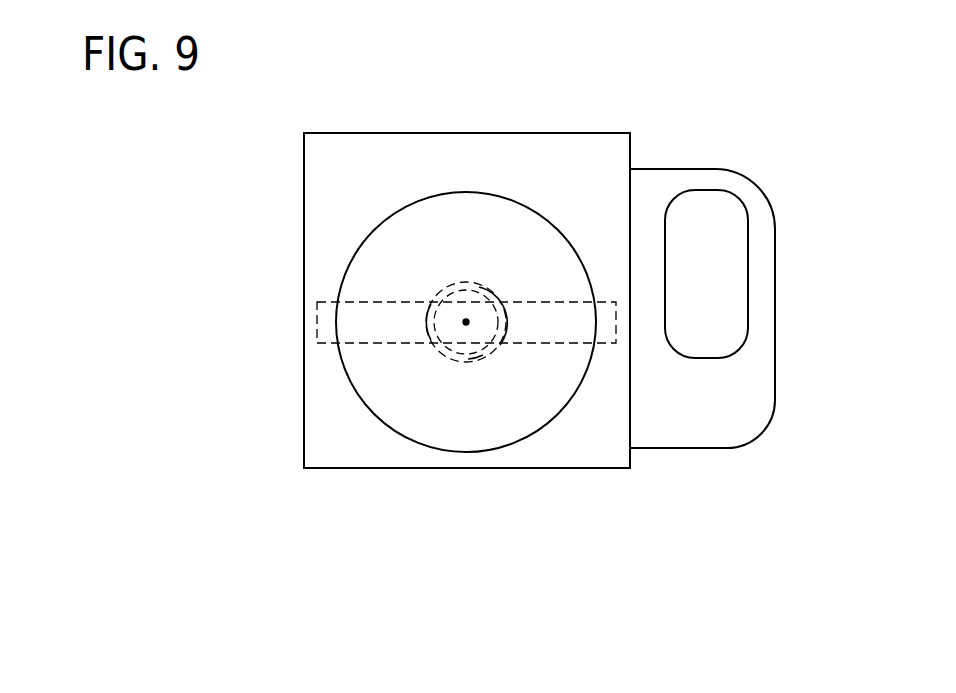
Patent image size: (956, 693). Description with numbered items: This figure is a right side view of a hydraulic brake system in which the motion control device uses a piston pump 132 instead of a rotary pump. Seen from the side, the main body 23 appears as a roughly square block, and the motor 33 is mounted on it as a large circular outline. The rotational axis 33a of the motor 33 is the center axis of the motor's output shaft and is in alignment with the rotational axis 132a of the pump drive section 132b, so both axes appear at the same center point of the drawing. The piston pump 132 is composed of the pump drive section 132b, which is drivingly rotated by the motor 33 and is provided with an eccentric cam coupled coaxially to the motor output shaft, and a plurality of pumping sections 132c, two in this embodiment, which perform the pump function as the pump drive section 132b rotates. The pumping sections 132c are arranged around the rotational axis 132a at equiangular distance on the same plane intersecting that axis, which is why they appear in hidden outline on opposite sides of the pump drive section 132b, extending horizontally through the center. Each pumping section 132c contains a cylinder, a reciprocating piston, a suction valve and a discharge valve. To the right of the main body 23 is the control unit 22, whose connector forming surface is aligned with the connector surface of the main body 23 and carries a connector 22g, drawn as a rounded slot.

The main body 23 is at (532, 133).
The motor 33 is at (485, 188).
The rotational axis of the motor 33a is at (466, 322).
The rotational axis of the pump drive section 132a is at (398, 209).
The piston pump 132 is at (484, 325).
The pump drive section 132b is at (463, 350).
The pumping sections 132c is at (397, 328).
The control unit 22 is at (775, 353).
The connector 22g is at (705, 190).